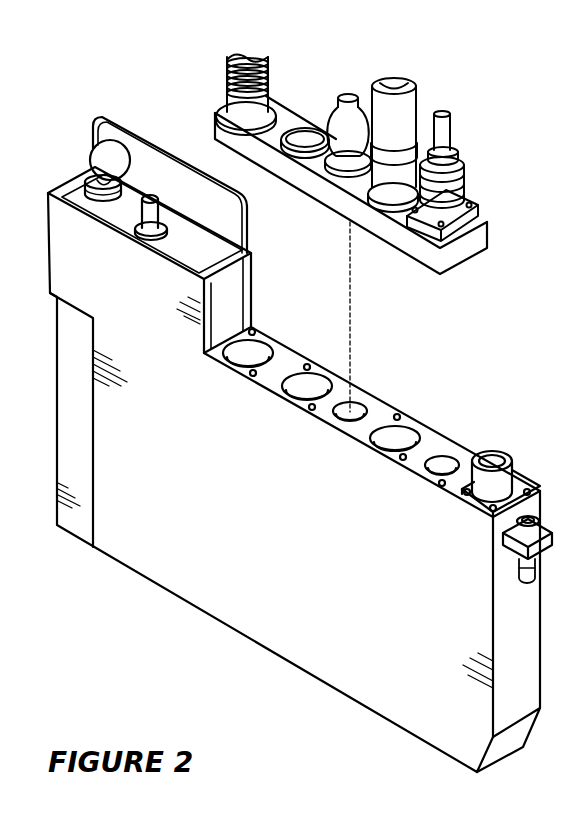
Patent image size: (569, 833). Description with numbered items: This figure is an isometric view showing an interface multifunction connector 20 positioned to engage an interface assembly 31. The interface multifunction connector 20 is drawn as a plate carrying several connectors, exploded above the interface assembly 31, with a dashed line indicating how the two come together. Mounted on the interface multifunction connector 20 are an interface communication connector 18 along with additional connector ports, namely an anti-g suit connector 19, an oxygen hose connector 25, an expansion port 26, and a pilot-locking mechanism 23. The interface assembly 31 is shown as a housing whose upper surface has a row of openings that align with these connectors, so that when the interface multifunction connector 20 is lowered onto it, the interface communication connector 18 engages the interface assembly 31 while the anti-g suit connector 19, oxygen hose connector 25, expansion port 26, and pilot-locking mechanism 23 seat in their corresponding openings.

The interface communication connector 18 is at (456, 190).
The anti-g suit connector 19 is at (386, 97).
The interface multifunction connector 20 is at (316, 195).
The pilot-locking mechanism 23 is at (338, 115).
The oxygen hose connector 25 is at (233, 73).
The expansion port 26 is at (305, 136).
The interface assembly 31 is at (236, 608).